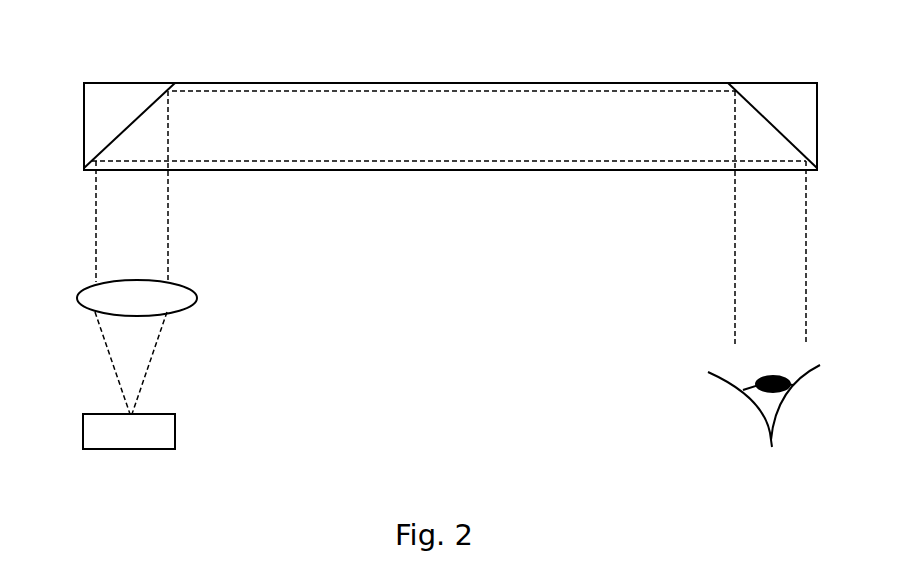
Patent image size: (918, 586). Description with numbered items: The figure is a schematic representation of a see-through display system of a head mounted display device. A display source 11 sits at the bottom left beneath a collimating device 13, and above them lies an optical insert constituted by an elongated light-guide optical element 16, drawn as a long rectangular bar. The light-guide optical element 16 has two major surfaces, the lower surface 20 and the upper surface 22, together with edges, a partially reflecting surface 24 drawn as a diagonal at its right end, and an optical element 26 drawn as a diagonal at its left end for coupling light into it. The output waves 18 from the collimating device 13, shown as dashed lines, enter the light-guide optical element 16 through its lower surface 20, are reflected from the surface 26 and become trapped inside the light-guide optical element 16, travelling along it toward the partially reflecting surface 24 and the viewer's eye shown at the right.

The display source 11 is at (175, 440).
The collimating device 13 is at (190, 288).
The light-guide optical element 16 is at (563, 68).
The output waves 18 is at (93, 216).
The lower surface 20 is at (433, 170).
The major surface 22 is at (265, 83).
The partially reflecting surface 24 is at (758, 117).
The optical element for coupling light 26 is at (137, 118).